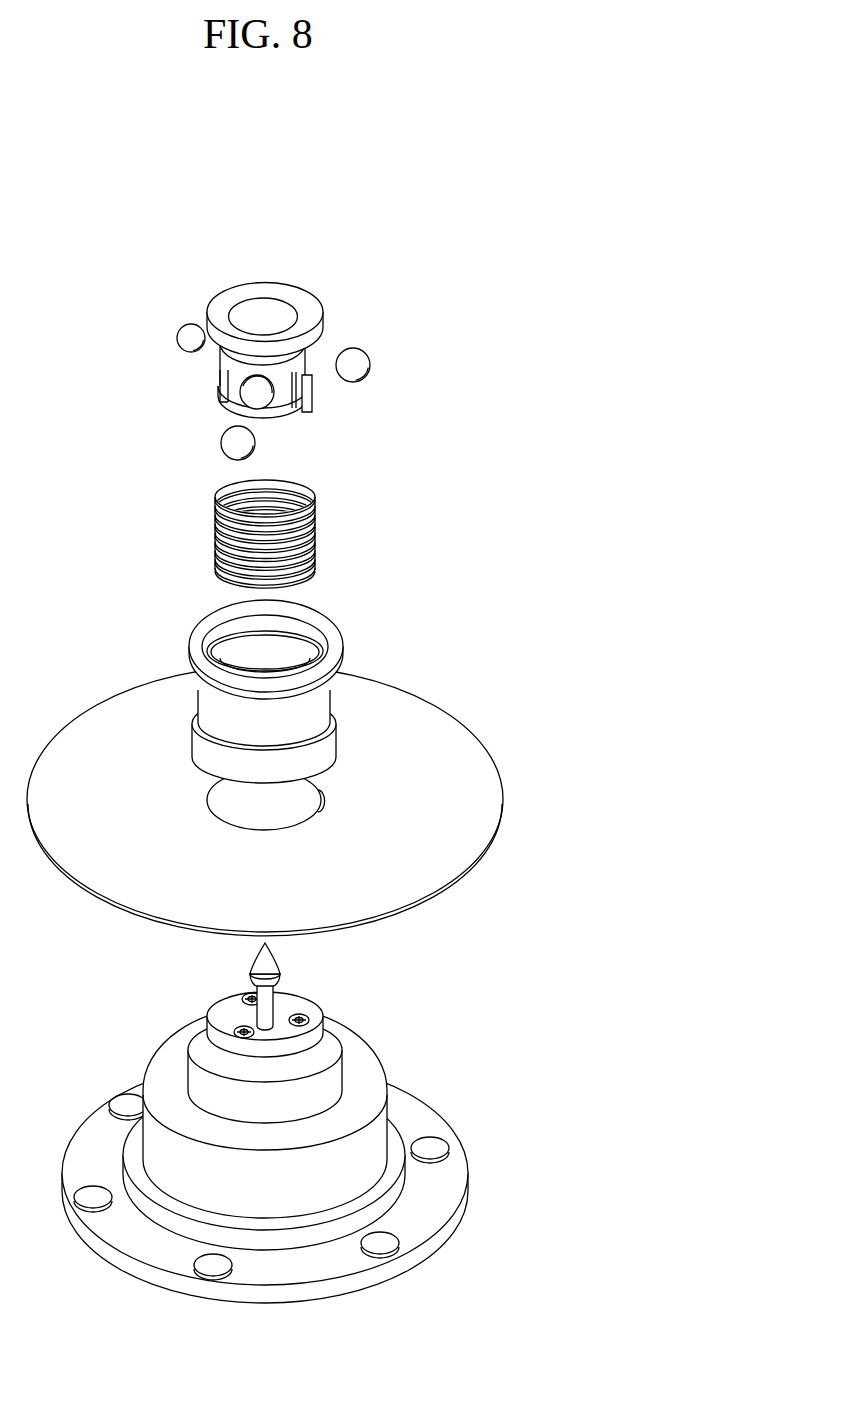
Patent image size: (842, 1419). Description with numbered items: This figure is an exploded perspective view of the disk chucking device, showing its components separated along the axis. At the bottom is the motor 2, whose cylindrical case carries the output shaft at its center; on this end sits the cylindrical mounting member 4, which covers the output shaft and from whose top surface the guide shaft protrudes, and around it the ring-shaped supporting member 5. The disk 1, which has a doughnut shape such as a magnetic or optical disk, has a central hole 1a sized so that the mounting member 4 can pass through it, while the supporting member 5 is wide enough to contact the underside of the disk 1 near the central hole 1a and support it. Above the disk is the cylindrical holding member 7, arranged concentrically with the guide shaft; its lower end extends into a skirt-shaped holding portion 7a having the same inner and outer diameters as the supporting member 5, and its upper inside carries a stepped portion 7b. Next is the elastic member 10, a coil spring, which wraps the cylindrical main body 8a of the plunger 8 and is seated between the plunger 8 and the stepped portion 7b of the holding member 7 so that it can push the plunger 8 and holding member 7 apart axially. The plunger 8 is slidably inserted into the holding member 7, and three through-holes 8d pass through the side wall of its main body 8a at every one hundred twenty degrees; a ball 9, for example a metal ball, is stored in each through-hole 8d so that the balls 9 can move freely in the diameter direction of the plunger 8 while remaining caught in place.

The disk 1 is at (295, 801).
The central hole 1a is at (322, 788).
The motor 2 is at (366, 1073).
The mounting member 4 is at (320, 1020).
The supporting member 5 is at (333, 1038).
The holding member 7 is at (293, 680).
The holding portion 7a is at (326, 746).
The stepped portion 7b is at (214, 640).
The plunger 8 is at (262, 357).
The main body 8a is at (224, 388).
The through-holes 8d is at (268, 402).
The balls 9 is at (370, 357).
The elastic member 10 is at (316, 534).